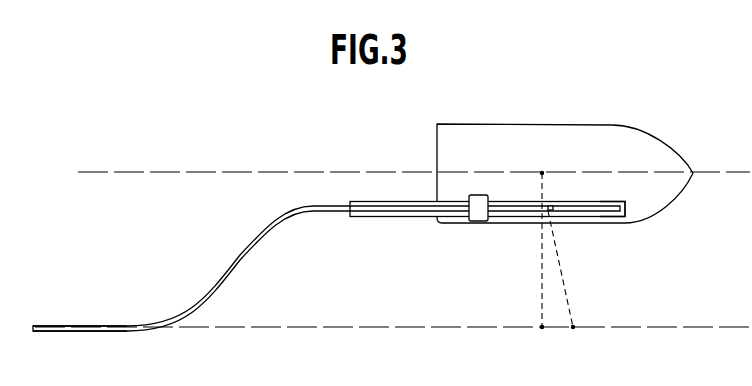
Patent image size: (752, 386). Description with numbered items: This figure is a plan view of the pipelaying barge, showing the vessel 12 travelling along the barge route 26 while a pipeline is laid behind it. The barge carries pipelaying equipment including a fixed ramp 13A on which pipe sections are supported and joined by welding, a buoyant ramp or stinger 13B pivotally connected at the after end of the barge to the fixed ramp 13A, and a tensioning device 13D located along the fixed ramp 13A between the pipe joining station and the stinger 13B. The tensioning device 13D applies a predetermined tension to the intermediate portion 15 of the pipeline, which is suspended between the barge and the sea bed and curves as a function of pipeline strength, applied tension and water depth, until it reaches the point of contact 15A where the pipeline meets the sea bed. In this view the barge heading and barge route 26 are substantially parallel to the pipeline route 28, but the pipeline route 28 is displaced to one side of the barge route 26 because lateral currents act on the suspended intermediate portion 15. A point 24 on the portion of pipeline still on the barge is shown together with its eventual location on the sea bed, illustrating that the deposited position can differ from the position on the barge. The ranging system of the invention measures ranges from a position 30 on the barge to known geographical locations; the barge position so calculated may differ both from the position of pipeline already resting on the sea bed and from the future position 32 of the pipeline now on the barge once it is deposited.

The vessel 12 is at (640, 156).
The fixed ramp 13A is at (623, 203).
The buoyant ramp or stinger 13B is at (370, 201).
The tensioning device 13D is at (478, 202).
The intermediate portion of the pipeline 15 is at (260, 241).
The point of contact 15A is at (172, 327).
The point on the pipeline 24 is at (553, 209).
The barge route 26 is at (202, 172).
The pipeline route 28 is at (367, 327).
The position on the barge 30 is at (542, 173).
The future position of the pipeline 32 is at (542, 327).